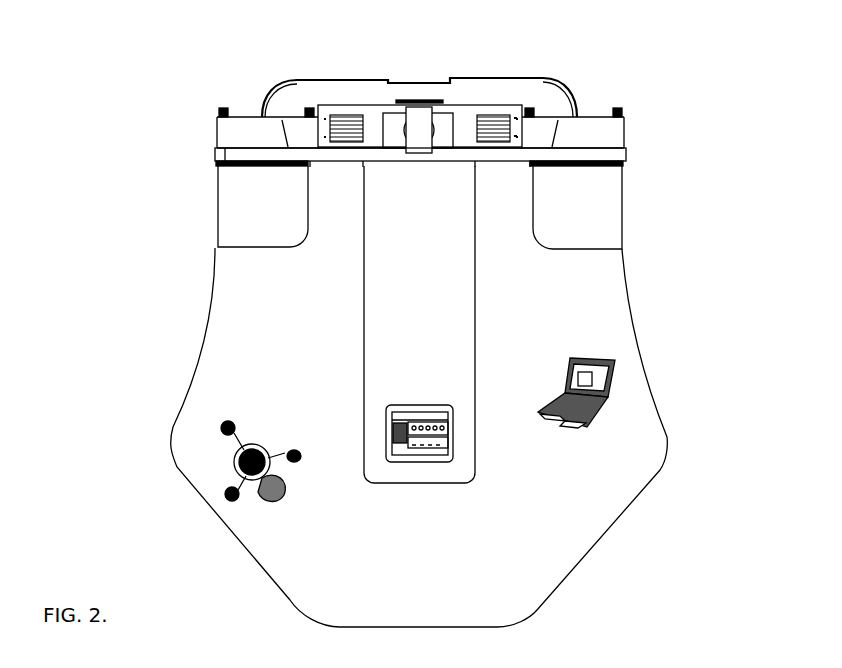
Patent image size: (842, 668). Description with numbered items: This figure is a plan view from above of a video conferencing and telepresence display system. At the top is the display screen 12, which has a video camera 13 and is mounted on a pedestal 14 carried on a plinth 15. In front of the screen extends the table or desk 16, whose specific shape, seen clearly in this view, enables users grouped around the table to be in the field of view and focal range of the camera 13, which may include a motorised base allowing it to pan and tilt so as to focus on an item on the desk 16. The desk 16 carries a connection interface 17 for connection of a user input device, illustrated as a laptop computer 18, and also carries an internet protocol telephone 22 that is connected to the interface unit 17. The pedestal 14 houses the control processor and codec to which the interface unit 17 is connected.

The display screen 12 is at (623, 156).
The video camera 13 is at (418, 117).
The pedestal 14 is at (512, 113).
The plinth 15 is at (342, 95).
The table or desk 16 is at (555, 538).
The connection interface 17 is at (390, 428).
The laptop computer 18 is at (617, 362).
The internet protocol (IP) telephone 22 is at (232, 457).